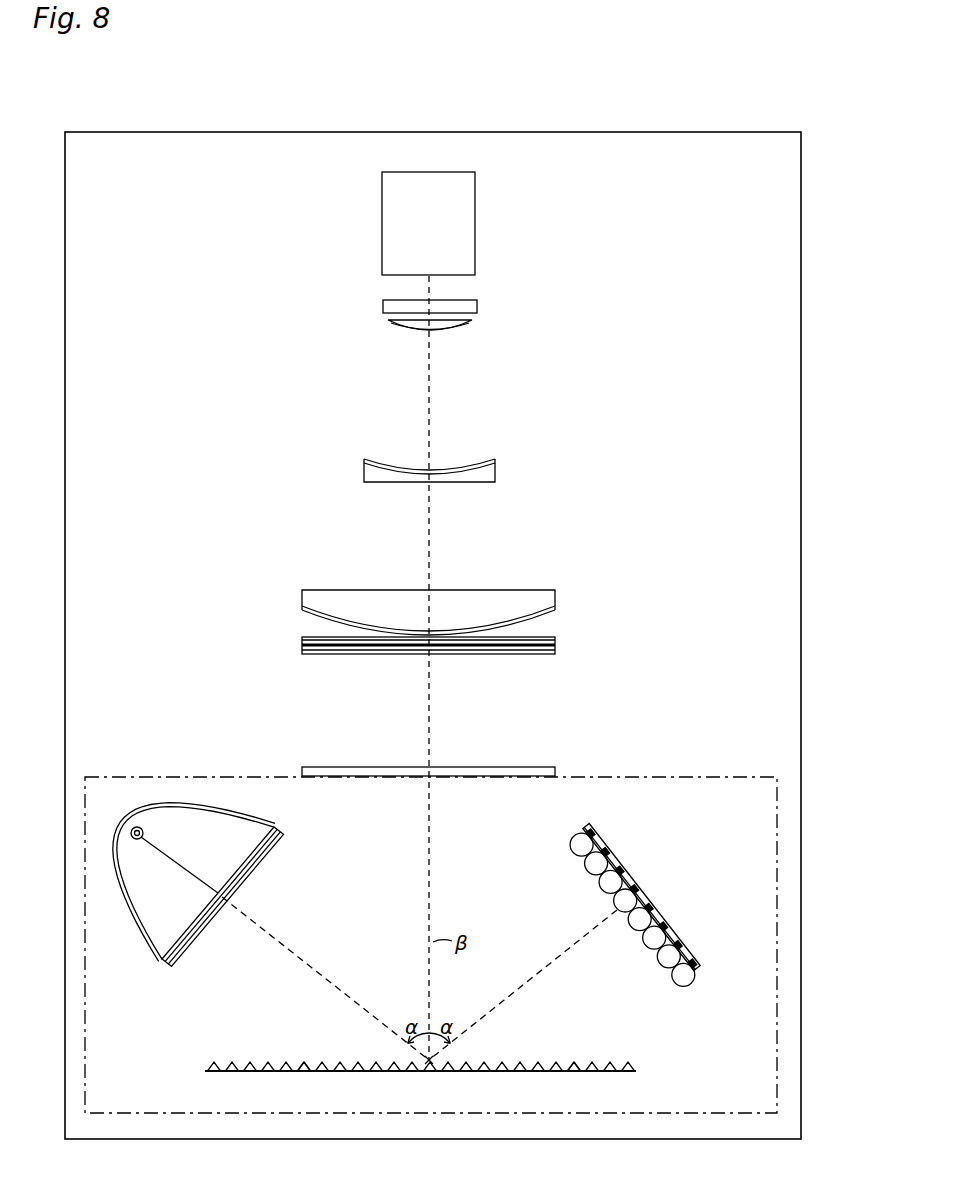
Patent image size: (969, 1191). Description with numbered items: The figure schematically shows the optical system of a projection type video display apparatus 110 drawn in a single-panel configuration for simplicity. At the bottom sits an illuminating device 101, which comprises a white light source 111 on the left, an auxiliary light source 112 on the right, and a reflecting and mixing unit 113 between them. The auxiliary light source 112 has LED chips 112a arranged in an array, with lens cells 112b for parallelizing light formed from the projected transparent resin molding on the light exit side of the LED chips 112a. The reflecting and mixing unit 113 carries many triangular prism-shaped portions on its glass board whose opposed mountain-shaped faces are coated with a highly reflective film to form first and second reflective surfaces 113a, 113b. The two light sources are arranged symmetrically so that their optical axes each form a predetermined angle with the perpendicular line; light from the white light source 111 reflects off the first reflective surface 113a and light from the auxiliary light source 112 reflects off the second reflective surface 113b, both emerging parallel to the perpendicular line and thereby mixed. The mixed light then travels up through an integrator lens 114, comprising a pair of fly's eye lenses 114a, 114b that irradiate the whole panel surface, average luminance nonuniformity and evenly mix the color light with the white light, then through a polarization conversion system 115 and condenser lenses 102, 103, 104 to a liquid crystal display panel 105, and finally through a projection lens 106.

The illuminating device 101 is at (194, 778).
The condenser lens 102 is at (556, 600).
The condenser lens 103 is at (496, 473).
The condenser lens 104 is at (474, 329).
The liquid crystal display panel 105 is at (478, 305).
The projection lens 106 is at (475, 224).
The projection type video display apparatus 110 is at (798, 559).
The white light source 111 is at (185, 954).
The auxiliary light source 112 is at (642, 906).
The LED chip 112a is at (631, 890).
The lens cell 112b is at (572, 846).
The reflecting and mixing unit 113 is at (458, 1051).
The first reflective surface 113a is at (300, 1061).
The second reflective surface 113b is at (311, 1061).
The integrator lens 114 is at (379, 706).
The fly's eye lens 114a is at (302, 767).
The fly's eye lens 114b is at (300, 654).
The polarization conversion system 115 is at (556, 641).